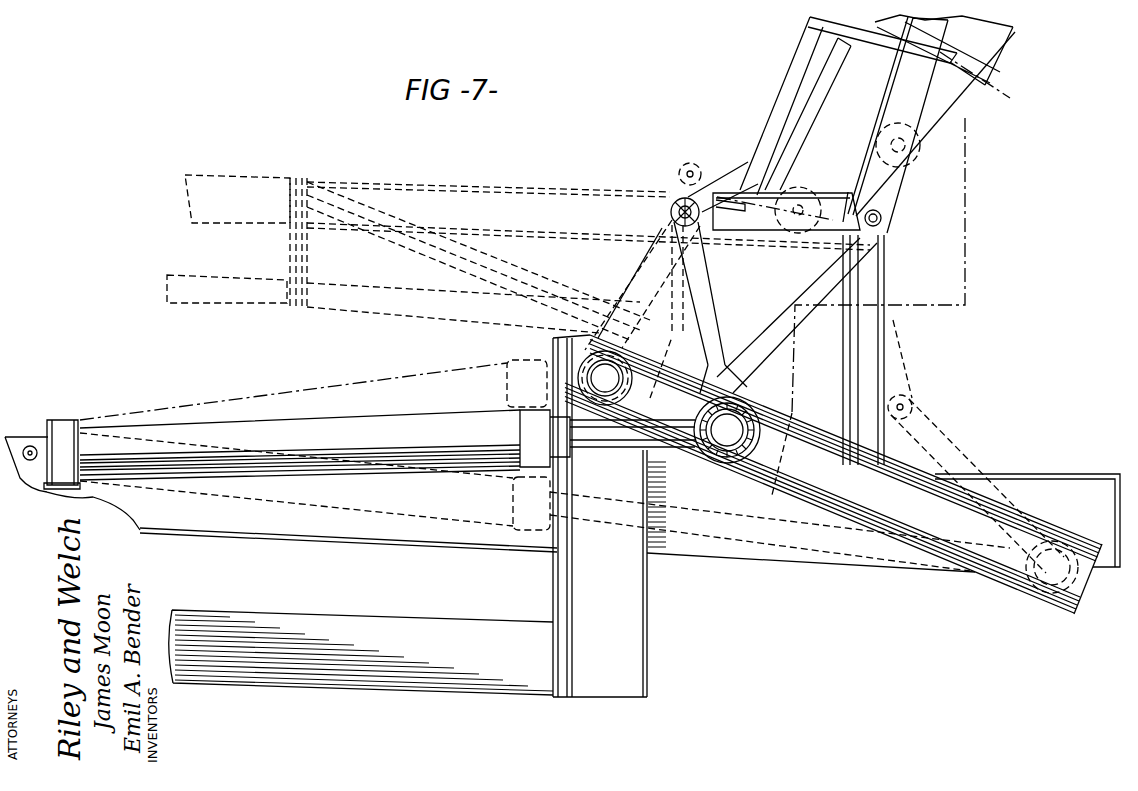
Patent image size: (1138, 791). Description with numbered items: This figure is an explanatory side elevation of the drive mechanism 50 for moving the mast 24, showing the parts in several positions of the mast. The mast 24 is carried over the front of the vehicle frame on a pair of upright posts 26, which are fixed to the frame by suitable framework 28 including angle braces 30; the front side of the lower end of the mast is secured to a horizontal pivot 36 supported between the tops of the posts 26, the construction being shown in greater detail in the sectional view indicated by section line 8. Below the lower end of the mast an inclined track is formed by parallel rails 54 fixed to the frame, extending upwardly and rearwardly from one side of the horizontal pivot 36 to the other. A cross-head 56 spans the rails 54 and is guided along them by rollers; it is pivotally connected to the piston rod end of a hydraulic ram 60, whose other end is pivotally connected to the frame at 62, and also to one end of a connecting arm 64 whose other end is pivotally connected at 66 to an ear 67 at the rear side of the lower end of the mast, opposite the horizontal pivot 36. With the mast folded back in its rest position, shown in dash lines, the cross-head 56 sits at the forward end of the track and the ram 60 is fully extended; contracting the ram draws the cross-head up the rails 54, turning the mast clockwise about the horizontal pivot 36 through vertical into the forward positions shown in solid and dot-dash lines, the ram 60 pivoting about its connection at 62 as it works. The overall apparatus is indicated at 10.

The section line 8 is at (1010, 123).
The lifting apparatus 10 is at (682, 140).
The mast 24 is at (800, 62).
The upright posts 26 is at (878, 325).
The framework 28 is at (628, 598).
The angle braces 30 is at (820, 256).
The horizontal pivot 36 is at (880, 218).
The drive mechanism 50 is at (953, 416).
The rails 54 is at (893, 510).
The cross-head 56 is at (728, 430).
The hydraulic ram 60 is at (588, 460).
The frame connection 62 is at (28, 448).
The connecting arm 64 is at (653, 260).
The pivotal connection 66 is at (672, 180).
The ear 67 is at (692, 163).